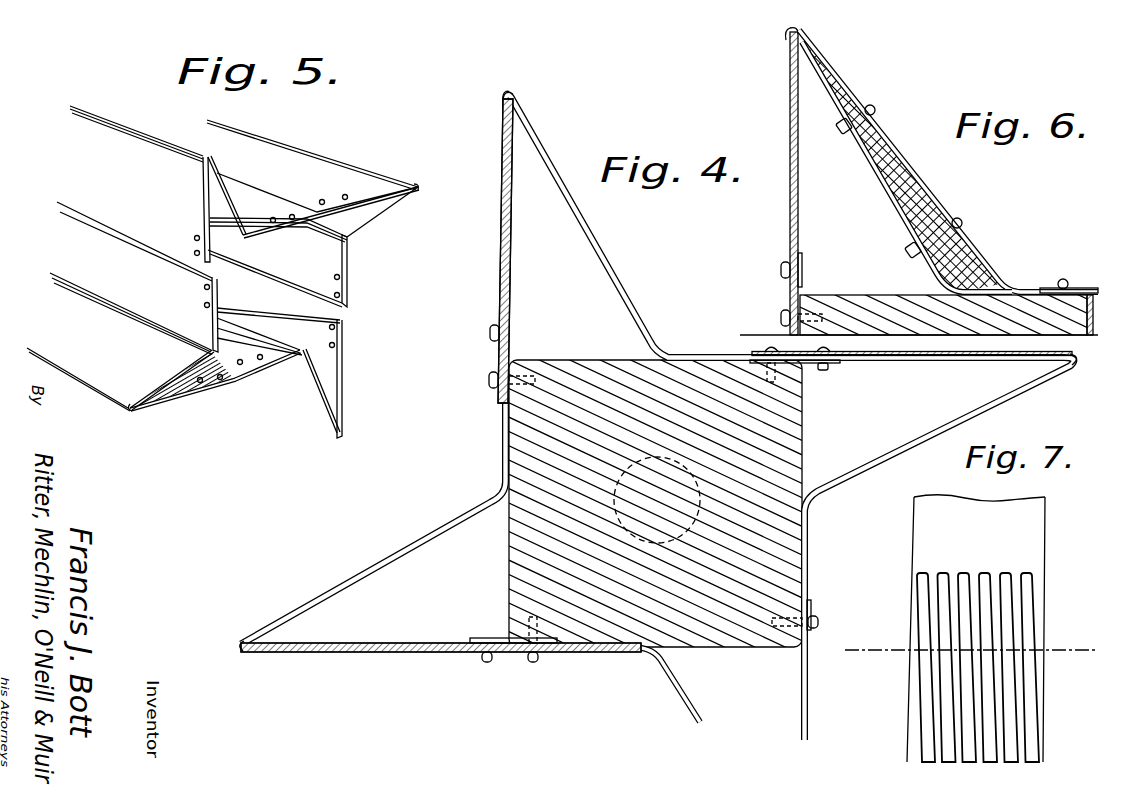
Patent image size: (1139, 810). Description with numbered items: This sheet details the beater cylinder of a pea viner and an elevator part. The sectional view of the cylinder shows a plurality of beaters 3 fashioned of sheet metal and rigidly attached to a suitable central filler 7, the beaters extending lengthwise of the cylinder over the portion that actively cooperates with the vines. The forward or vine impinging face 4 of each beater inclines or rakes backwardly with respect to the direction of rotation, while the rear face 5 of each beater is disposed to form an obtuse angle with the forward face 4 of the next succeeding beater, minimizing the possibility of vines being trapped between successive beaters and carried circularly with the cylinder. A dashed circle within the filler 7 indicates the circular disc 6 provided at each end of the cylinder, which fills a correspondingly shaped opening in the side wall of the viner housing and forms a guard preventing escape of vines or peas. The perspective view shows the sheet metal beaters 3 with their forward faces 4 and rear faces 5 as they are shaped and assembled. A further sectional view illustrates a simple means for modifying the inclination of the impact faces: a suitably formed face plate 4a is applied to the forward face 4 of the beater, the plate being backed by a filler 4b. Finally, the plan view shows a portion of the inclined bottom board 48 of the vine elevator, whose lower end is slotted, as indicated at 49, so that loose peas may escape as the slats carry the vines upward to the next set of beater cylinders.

In FIG. 5, the beater 3 is at (390, 185).
In FIG. 4, the beater 3 is at (520, 96).
In FIG. 5, the forward face 4 is at (383, 218).
In FIG. 4, the forward face 4 is at (621, 268).
In FIG. 6, the forward face 4 is at (897, 200).
In FIG. 6, the face plate 4a is at (949, 197).
In FIG. 6, the filler 4b is at (953, 250).
In FIG. 5, the rear face 5 is at (335, 183).
In FIG. 4, the rear face 5 is at (500, 250).
In FIG. 4, the circular disc 6 is at (688, 472).
In FIG. 4, the central filler 7 is at (530, 460).
In FIG. 7, the bottom board 48 is at (1038, 523).
In FIG. 7, the slots 49 is at (1030, 608).